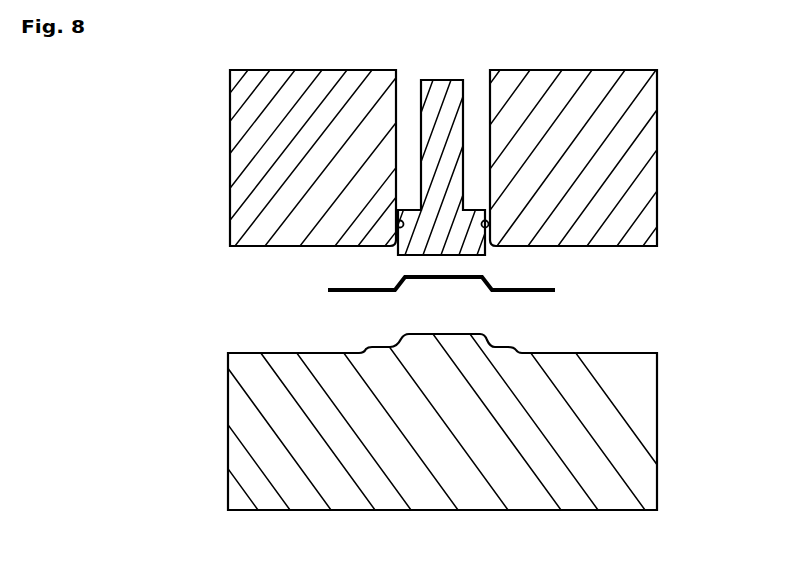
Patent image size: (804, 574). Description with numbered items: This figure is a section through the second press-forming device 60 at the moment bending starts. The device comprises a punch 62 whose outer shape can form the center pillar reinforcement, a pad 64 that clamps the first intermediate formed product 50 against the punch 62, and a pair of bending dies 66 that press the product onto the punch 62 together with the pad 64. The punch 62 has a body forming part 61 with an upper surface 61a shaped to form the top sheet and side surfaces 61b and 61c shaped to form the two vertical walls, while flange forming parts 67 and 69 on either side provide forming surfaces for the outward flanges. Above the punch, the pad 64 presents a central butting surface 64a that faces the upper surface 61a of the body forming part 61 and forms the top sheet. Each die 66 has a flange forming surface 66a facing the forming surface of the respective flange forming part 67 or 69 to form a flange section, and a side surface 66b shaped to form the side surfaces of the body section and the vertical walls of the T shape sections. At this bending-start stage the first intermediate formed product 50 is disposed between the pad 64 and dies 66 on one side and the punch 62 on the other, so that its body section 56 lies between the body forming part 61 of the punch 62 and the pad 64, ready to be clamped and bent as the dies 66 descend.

The second press-forming device 60 is at (726, 113).
The bending dies 66 is at (243, 173).
The flange forming surface 66a is at (248, 248).
The side surface 66b is at (396, 231).
The pad 64 is at (478, 250).
The central butting surface 64a is at (401, 256).
The first intermediate formed product 50 is at (553, 292).
The body section 56 is at (430, 280).
The punch 62 is at (636, 437).
The body forming part 61 is at (433, 345).
The upper surface 61a is at (442, 333).
The side surface 61b is at (372, 347).
The side surface 61c is at (512, 351).
The flange forming part 67 is at (256, 344).
The flange forming part 69 is at (626, 347).